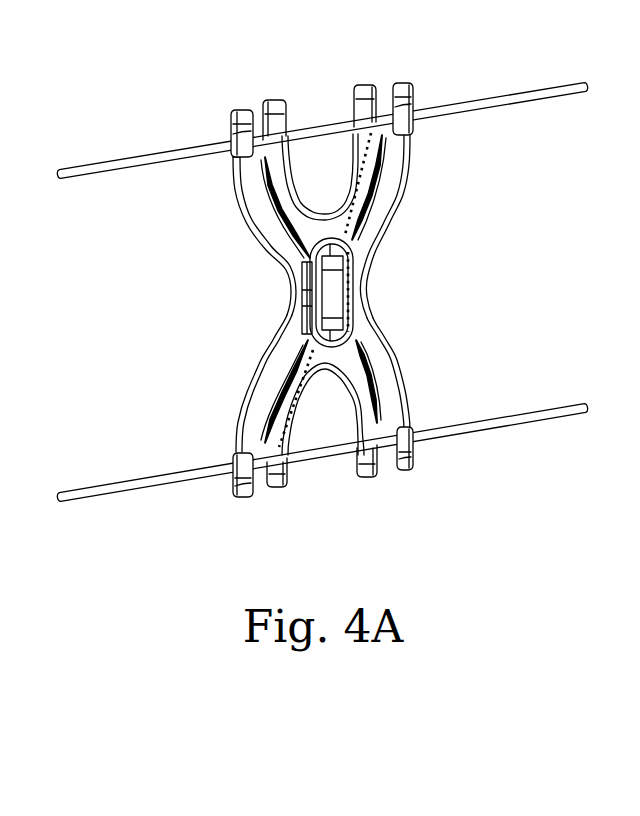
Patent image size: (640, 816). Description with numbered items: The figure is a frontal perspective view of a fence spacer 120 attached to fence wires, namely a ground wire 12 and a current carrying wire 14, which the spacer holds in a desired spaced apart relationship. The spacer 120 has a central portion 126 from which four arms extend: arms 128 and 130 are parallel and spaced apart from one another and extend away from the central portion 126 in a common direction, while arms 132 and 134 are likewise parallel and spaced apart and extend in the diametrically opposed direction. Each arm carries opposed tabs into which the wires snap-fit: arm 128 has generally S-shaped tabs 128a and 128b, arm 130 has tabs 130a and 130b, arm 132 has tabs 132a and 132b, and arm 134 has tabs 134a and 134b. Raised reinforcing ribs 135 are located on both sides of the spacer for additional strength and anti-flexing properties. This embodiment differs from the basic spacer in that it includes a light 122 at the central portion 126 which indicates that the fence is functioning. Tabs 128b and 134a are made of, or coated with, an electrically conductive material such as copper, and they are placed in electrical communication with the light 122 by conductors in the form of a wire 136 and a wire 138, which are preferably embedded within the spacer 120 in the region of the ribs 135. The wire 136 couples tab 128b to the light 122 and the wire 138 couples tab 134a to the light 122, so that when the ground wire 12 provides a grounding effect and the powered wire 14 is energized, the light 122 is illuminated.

The ground wire 12 is at (513, 95).
The current carrying wire 14 is at (528, 413).
The fence spacer 120 is at (365, 287).
The light 122 is at (331, 292).
The central portion 126 is at (305, 297).
The arm 128 is at (404, 175).
The tab 128a is at (406, 84).
The tab 128b is at (364, 86).
The arm 130 is at (228, 173).
The tab 130a is at (271, 99).
The tab 130b is at (235, 118).
The arm 132 is at (425, 427).
The tab 132a is at (366, 480).
The tab 132b is at (411, 470).
The arm 134 is at (239, 428).
The tab 134a is at (278, 490).
The tab 134b is at (247, 497).
The raised reinforcing ribs 135 is at (385, 208).
The wire 136 is at (360, 243).
The wire 138 is at (295, 390).